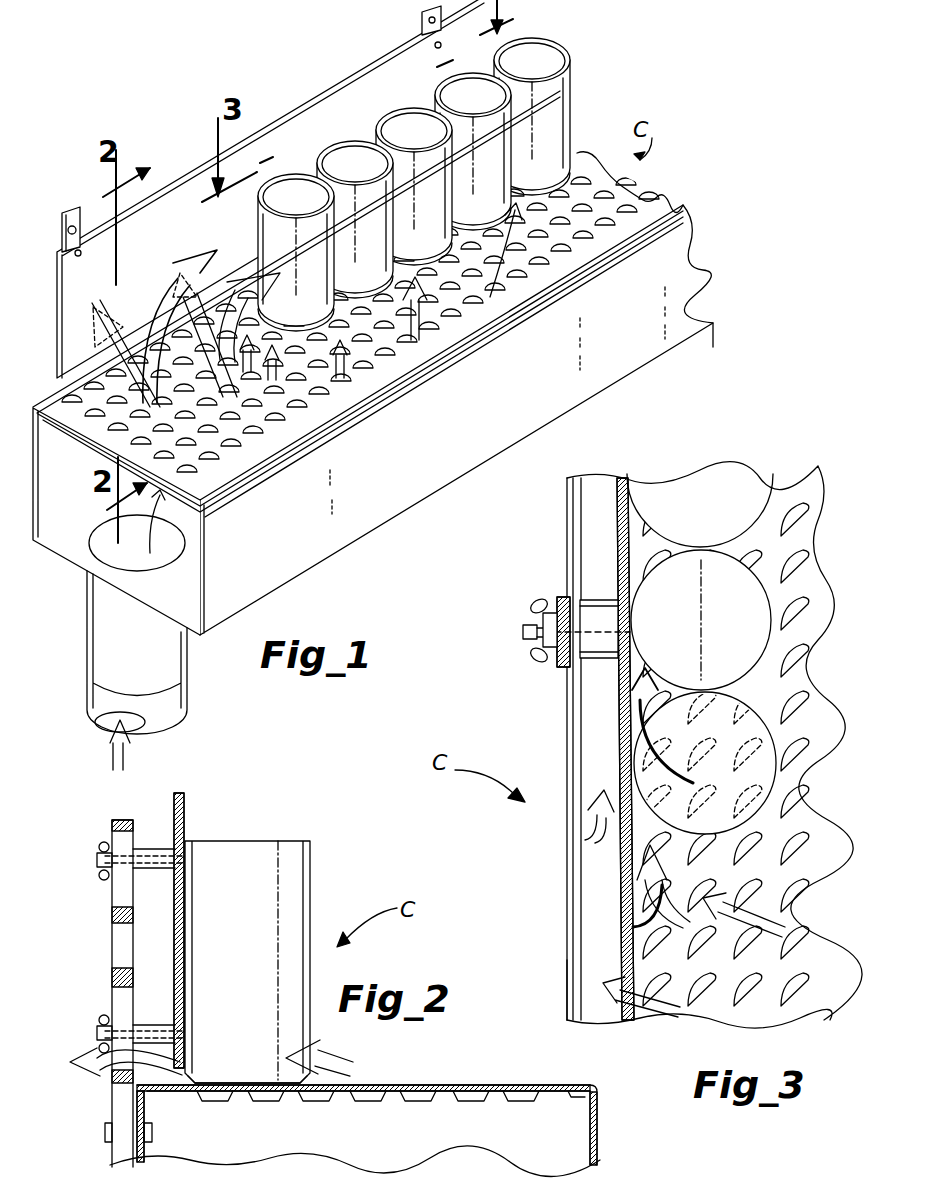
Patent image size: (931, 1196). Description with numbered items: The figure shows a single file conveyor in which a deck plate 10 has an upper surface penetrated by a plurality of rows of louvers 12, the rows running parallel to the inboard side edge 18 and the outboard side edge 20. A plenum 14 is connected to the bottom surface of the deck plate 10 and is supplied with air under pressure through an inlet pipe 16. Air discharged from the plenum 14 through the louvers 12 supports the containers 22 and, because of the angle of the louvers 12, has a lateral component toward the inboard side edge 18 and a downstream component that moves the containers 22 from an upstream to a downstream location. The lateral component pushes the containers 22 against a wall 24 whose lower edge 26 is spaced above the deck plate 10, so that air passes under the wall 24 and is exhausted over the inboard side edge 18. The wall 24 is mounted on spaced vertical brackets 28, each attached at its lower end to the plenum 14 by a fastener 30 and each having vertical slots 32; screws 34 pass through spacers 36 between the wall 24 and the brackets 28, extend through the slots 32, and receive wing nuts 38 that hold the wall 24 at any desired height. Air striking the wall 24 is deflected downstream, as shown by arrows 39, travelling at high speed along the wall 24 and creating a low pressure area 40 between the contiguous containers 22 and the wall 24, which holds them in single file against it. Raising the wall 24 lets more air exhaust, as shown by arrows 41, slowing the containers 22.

In FIG. 1, the deck plate 10 is at (630, 178).
In FIG. 3, the deck plate 10 is at (800, 467).
In FIG. 1, the louvers 12 is at (445, 342).
In FIG. 2, the louvers 12 is at (465, 1100).
In FIG. 3, the louvers 12 is at (718, 729).
In FIG. 1, the plenum 14 is at (347, 530).
In FIG. 2, the plenum 14 is at (599, 1128).
In FIG. 3, the plenum 14 is at (572, 968).
In FIG. 1, the inlet pipe 16 is at (157, 671).
In FIG. 1, the inboard side edge 18 is at (62, 390).
In FIG. 2, the inboard side edge 18 is at (140, 1090).
In FIG. 3, the inboard side edge 18 is at (572, 887).
In FIG. 1, the outboard side edge 20 is at (303, 440).
In FIG. 2, the outboard side edge 20 is at (587, 1087).
In FIG. 1, the containers 22 is at (397, 110).
In FIG. 2, the containers 22 is at (294, 889).
In FIG. 3, the containers 22 is at (737, 484).
In FIG. 1, the wall 24 is at (62, 276).
In FIG. 2, the wall 24 is at (185, 804).
In FIG. 3, the wall 24 is at (623, 513).
In FIG. 2, the lower edge 26 is at (167, 1088).
In FIG. 1, the vertical brackets 28 is at (72, 214).
In FIG. 2, the vertical brackets 28 is at (92, 982).
In FIG. 3, the vertical brackets 28 is at (563, 597).
In FIG. 2, the fastener 30 is at (107, 1140).
In FIG. 2, the vertical slots 32 is at (108, 907).
In FIG. 2, the screws 34 is at (194, 887).
In FIG. 3, the screws 34 is at (523, 633).
In FIG. 2, the spacers 36 is at (152, 848).
In FIG. 3, the spacers 36 is at (596, 662).
In FIG. 2, the wing nuts 38 is at (95, 872).
In FIG. 3, the wing nuts 38 is at (532, 663).
In FIG. 1, the arrows 39 is at (175, 258).
In FIG. 3, the arrows 39 is at (585, 748).
In FIG. 3, the low pressure area 40 is at (640, 533).
In FIG. 1, the arrows 41 is at (58, 318).
In FIG. 2, the arrows 41 is at (94, 1046).
In FIG. 3, the arrows 41 is at (585, 840).